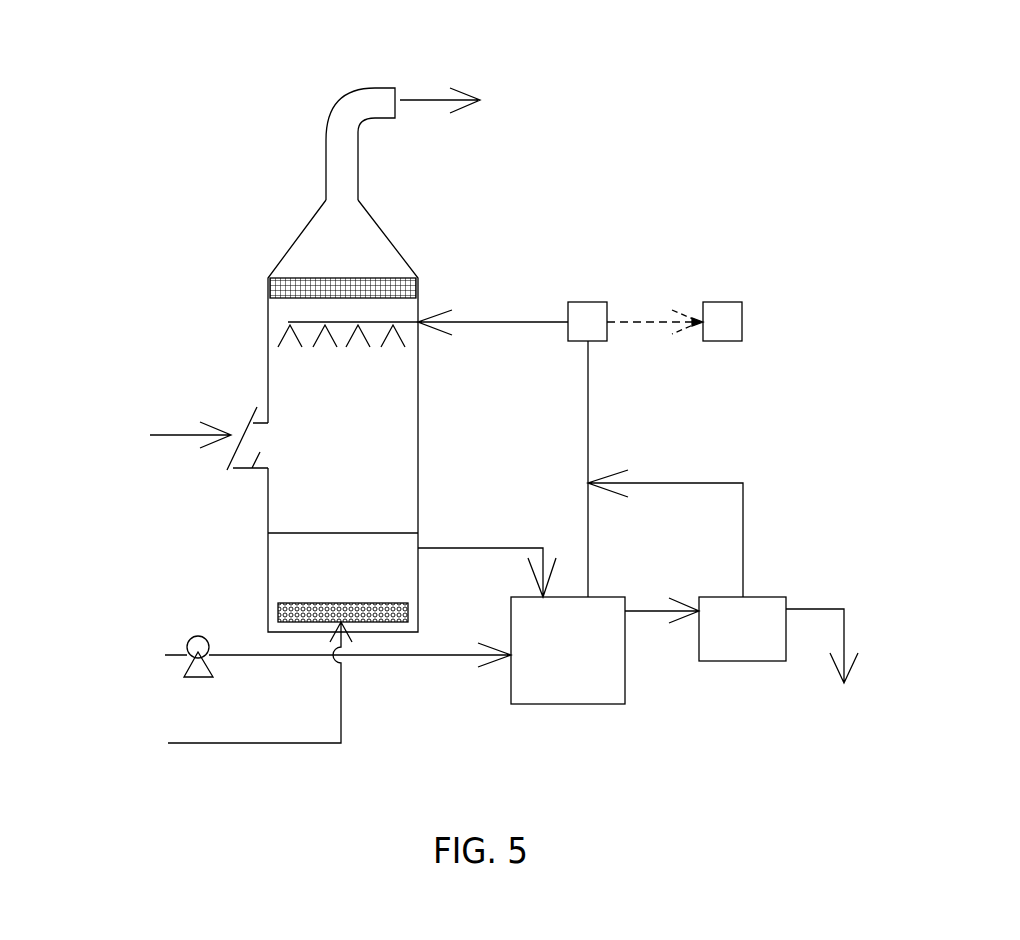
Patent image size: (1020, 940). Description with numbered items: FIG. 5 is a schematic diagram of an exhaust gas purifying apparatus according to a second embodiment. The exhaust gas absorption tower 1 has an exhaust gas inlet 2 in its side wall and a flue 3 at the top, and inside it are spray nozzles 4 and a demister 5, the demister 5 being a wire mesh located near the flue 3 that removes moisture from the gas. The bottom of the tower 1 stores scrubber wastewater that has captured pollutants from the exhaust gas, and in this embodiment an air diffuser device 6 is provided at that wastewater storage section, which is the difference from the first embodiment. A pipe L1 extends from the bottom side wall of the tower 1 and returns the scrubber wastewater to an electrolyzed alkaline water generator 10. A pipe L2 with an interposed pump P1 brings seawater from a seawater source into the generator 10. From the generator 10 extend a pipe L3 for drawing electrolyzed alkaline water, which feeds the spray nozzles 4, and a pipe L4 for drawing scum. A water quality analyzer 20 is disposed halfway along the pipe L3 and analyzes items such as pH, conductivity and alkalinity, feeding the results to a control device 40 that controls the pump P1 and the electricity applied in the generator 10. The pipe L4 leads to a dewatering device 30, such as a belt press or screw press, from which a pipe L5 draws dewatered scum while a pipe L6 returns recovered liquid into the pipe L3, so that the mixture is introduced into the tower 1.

The exhaust gas absorption tower 1 is at (268, 370).
The exhaust gas inlet 2 is at (258, 452).
The flue 3 is at (386, 97).
The spray nozzles 4 is at (300, 337).
The demister 5 is at (350, 277).
The air diffuser device 6 is at (292, 603).
The electrolyzed alkaline water generator 10 is at (568, 704).
The water quality analyzer 20 is at (590, 302).
The dewatering device 30 is at (738, 661).
The control device 40 is at (720, 302).
The pump P1 is at (197, 636).
The pipe L1 is at (478, 548).
The pipe L2 is at (370, 657).
The pipe for drawing of electrolyzed alkaline water L3 is at (588, 392).
The pipe for drawing of scum L4 is at (650, 611).
The pipe for drawing dewatered scum L5 is at (815, 609).
The pipe for liquid drawing L6 is at (695, 483).